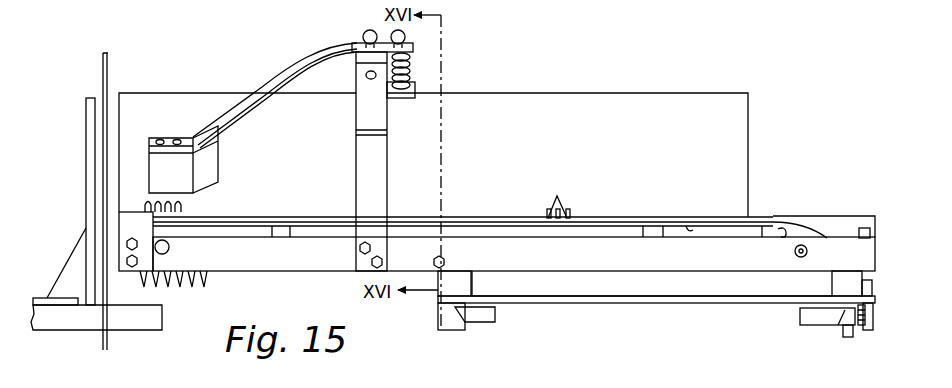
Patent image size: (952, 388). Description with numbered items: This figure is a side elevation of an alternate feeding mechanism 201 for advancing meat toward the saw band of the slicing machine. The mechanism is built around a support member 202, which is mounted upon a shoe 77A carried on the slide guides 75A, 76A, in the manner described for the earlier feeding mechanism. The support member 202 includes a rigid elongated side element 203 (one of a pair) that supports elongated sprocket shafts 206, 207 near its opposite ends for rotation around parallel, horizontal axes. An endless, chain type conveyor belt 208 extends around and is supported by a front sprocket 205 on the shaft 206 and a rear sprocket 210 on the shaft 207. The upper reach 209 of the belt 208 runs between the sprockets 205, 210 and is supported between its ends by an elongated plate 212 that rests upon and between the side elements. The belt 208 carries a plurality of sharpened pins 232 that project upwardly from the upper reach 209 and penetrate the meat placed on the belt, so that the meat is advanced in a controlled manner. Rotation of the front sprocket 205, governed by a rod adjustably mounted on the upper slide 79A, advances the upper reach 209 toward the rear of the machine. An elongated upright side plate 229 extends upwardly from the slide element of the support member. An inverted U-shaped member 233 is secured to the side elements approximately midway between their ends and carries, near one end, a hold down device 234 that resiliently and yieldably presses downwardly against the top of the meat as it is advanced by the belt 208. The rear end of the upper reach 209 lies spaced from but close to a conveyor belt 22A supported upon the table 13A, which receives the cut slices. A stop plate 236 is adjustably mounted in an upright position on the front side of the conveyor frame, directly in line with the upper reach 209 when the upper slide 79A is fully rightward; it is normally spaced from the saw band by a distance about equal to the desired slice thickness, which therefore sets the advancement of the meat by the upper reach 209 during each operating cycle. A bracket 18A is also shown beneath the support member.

The feeding mechanism 201 is at (591, 84).
The upright side plate 229 is at (574, 133).
The inverted U-shaped member 233 is at (366, 118).
The hold down device 234 is at (182, 133).
The stop plate 236 is at (92, 143).
The conveyor belt 22A is at (42, 298).
The table 13A is at (125, 322).
The sprocket shaft 207 is at (172, 247).
The sprocket 210 is at (176, 227).
The upper reach 209 is at (531, 216).
The conveyor belt 208 is at (602, 215).
The sharpened pins 232 is at (552, 197).
The elongated plate 212 is at (693, 230).
The front sprocket 205 is at (797, 230).
The sprocket shaft 206 is at (794, 250).
The side element 203 is at (612, 262).
The upper slide 79A is at (830, 285).
The support member 202 is at (604, 308).
The bracket 18A is at (437, 322).
The slide guide 76A is at (495, 314).
The slide guide 75A is at (800, 313).
The shoe 77A is at (838, 325).